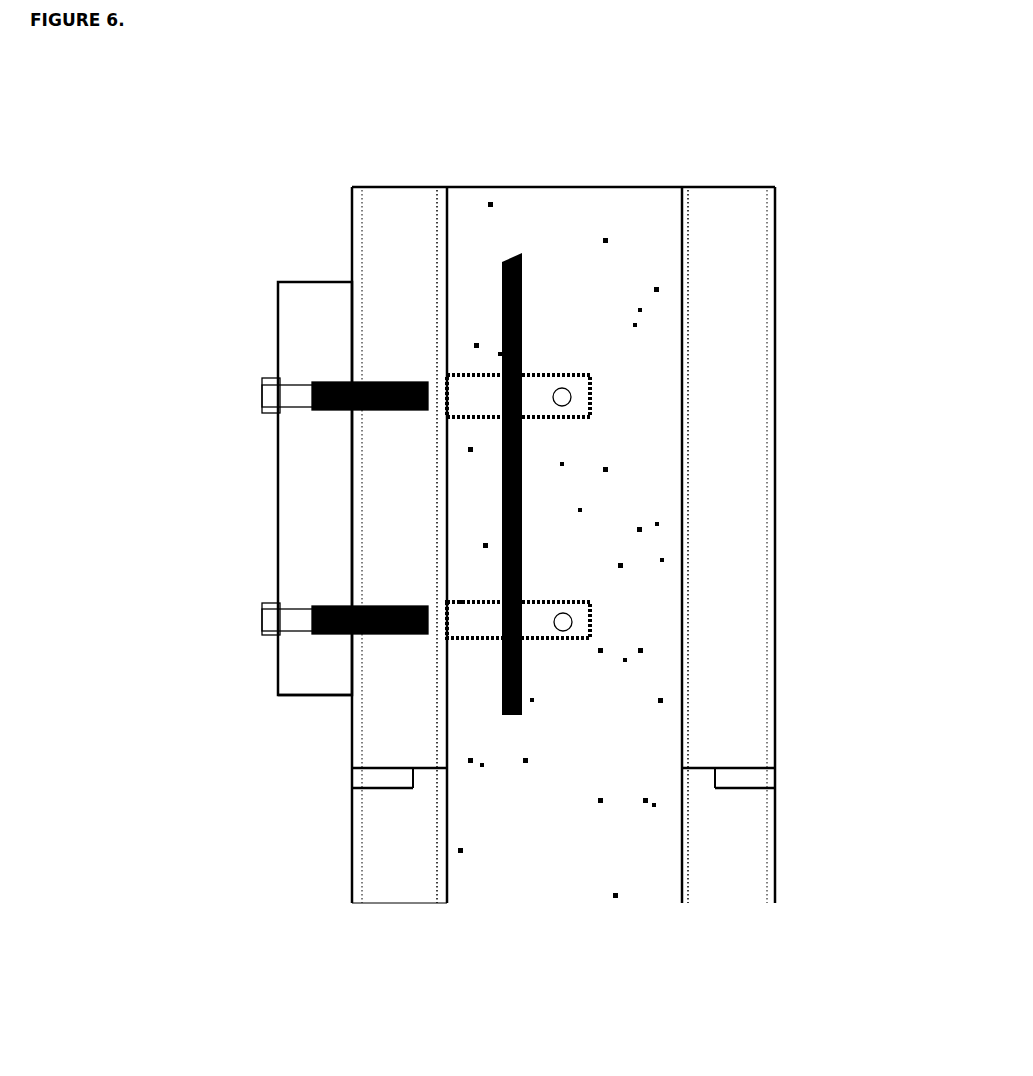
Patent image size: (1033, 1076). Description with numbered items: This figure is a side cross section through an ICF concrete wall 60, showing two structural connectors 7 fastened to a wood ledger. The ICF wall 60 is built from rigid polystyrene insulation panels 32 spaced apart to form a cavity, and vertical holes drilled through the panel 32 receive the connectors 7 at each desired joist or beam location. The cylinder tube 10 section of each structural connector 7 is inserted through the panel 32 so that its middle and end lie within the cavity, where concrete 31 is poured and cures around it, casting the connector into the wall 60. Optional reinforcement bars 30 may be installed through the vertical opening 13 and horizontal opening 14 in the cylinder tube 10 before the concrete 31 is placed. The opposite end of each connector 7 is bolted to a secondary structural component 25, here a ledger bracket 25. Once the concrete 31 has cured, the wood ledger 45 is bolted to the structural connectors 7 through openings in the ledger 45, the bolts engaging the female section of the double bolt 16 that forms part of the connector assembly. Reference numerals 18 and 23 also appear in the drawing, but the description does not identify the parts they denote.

The cylinder tube 10 is at (546, 372).
The vertical opening 13 is at (527, 372).
The first facing panel 18 is at (462, 370).
The polystyrene panel 32 is at (750, 296).
The concrete 31 is at (657, 222).
The reinforcement bar 30 is at (522, 552).
The structural connector 7 is at (587, 376).
The horizontal opening 14 is at (575, 390).
The wood ledger 45 is at (315, 310).
The ledger bracket 25 is at (318, 697).
The double bolt 16 is at (345, 378).
The nut 23 is at (262, 402).
The ICF concrete wall 60 is at (777, 783).